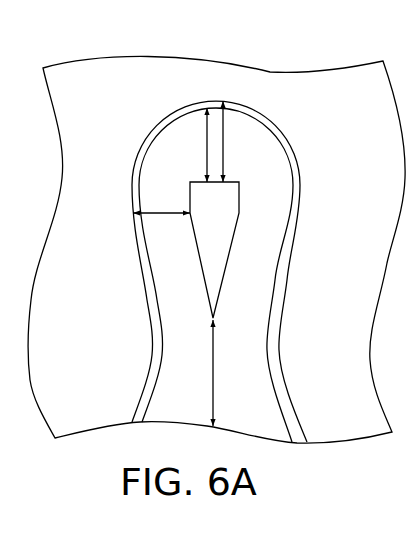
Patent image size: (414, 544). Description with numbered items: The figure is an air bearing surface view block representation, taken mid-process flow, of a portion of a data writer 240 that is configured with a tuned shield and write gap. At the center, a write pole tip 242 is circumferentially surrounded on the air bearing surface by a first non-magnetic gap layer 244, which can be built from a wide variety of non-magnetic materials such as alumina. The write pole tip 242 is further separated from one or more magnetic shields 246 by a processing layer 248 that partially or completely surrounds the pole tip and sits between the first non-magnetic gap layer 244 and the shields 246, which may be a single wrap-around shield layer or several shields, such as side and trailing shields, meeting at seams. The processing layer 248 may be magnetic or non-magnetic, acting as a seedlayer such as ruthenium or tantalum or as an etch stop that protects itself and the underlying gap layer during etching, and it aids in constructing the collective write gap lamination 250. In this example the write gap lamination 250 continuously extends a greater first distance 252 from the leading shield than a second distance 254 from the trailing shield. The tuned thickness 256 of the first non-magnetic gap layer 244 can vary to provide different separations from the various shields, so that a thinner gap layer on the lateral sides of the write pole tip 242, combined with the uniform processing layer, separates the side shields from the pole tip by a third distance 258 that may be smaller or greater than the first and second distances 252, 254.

The data writer 240 is at (85, 33).
The write pole tip 242 is at (230, 203).
The first non-magnetic gap layer 244 is at (280, 431).
The magnetic shield 246 is at (88, 426).
The processing layer 248 is at (291, 152).
The write gap lamination 250 is at (143, 135).
The first distance 252 is at (199, 373).
The second distance 254 is at (239, 141).
The tuned thickness 256 is at (192, 145).
The third distance 258 is at (161, 222).